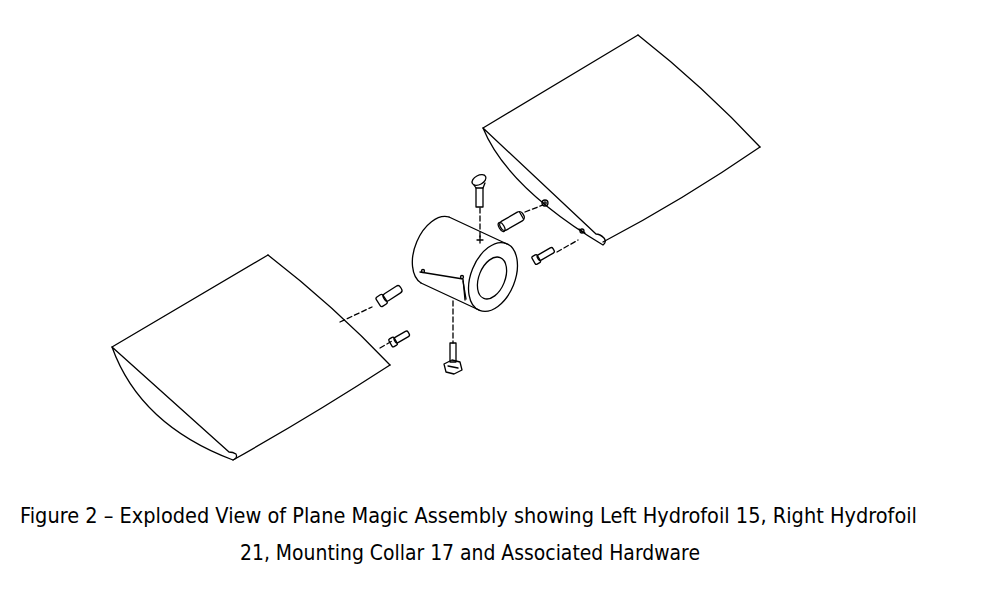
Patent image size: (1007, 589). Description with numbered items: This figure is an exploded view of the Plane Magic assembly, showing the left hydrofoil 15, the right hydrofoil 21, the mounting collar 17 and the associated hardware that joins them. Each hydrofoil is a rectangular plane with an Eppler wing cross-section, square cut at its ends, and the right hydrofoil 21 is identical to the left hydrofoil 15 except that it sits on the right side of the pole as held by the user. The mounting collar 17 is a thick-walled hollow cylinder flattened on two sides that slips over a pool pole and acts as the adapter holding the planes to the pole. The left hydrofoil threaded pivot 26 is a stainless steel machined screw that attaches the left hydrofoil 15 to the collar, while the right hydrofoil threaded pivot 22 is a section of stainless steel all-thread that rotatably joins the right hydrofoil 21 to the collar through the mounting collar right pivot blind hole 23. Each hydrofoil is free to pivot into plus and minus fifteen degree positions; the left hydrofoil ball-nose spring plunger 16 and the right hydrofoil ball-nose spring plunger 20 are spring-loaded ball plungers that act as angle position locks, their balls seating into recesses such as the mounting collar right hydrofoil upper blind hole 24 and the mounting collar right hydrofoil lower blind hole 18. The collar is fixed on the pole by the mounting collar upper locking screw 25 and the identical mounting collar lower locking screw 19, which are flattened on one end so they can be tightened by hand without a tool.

The left hydrofoil 15 is at (635, 167).
The left hydrofoil ball-nose spring plunger 16 is at (547, 257).
The mounting collar 17 is at (500, 307).
The mounting collar right hydrofoil lower blind hole 18 is at (468, 305).
The mounting collar lower locking screw 19 is at (457, 372).
The right hydrofoil ball-nose spring plunger 20 is at (403, 337).
The right hydrofoil 21 is at (272, 385).
The right hydrofoil threaded pivot 22 is at (381, 292).
The mounting collar right pivot blind hole 23 is at (423, 271).
The mounting collar right hydrofoil upper blind hole 24 is at (462, 276).
The mounting collar upper locking screw 25 is at (475, 177).
The left hydrofoil threaded pivot 26 is at (517, 210).